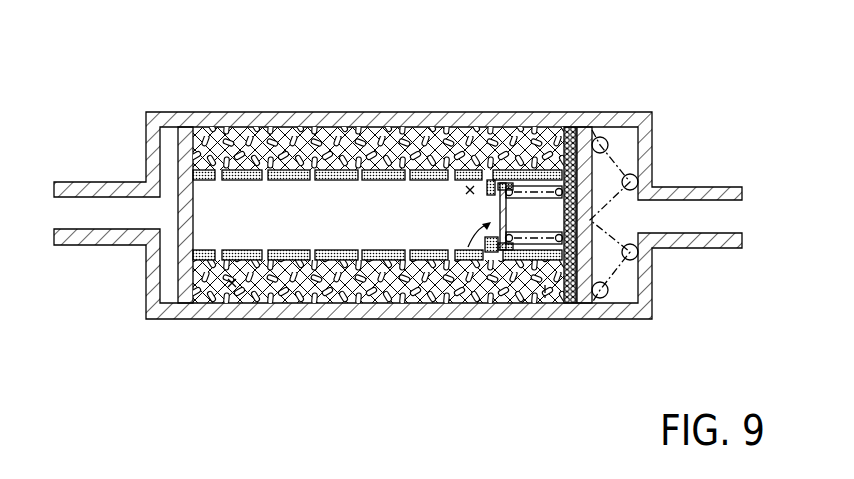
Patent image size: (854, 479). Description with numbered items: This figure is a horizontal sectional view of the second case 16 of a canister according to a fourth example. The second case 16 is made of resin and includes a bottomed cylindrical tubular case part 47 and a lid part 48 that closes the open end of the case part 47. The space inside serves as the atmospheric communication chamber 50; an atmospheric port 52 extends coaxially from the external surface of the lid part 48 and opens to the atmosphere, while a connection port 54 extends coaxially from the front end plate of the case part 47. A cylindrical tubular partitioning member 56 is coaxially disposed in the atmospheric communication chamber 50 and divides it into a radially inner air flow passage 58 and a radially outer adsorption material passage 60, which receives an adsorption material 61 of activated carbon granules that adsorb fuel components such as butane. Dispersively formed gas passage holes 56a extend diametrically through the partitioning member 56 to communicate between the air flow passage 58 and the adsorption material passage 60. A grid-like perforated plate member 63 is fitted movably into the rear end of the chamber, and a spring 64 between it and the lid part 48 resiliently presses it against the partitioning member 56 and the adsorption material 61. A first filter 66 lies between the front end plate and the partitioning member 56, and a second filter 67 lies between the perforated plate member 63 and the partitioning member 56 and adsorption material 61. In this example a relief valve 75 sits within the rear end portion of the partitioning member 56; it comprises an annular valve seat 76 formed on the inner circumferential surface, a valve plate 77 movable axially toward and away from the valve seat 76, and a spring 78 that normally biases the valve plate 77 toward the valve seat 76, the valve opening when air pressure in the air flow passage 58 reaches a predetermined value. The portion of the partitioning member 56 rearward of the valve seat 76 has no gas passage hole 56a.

The second case 16 is at (398, 169).
The case part 47 is at (233, 106).
The lid part 48 is at (653, 130).
The atmospheric communication chamber 50 is at (292, 128).
The atmospheric port 52 is at (708, 250).
The connection port 54 is at (90, 186).
The partitioning member 56 is at (378, 327).
The gas passage holes 56a is at (271, 306).
The air flow passage 58 is at (470, 186).
The adsorption material passage 60 is at (407, 292).
The adsorption material 61 is at (385, 130).
The perforated plate member 63 is at (588, 127).
The spring 64 is at (603, 138).
The first filter 66 is at (186, 290).
The second filter 67 is at (572, 305).
The relief valve 75 is at (464, 262).
The valve seat 76 is at (504, 183).
The valve plate 77 is at (497, 212).
The spring 78 is at (545, 300).